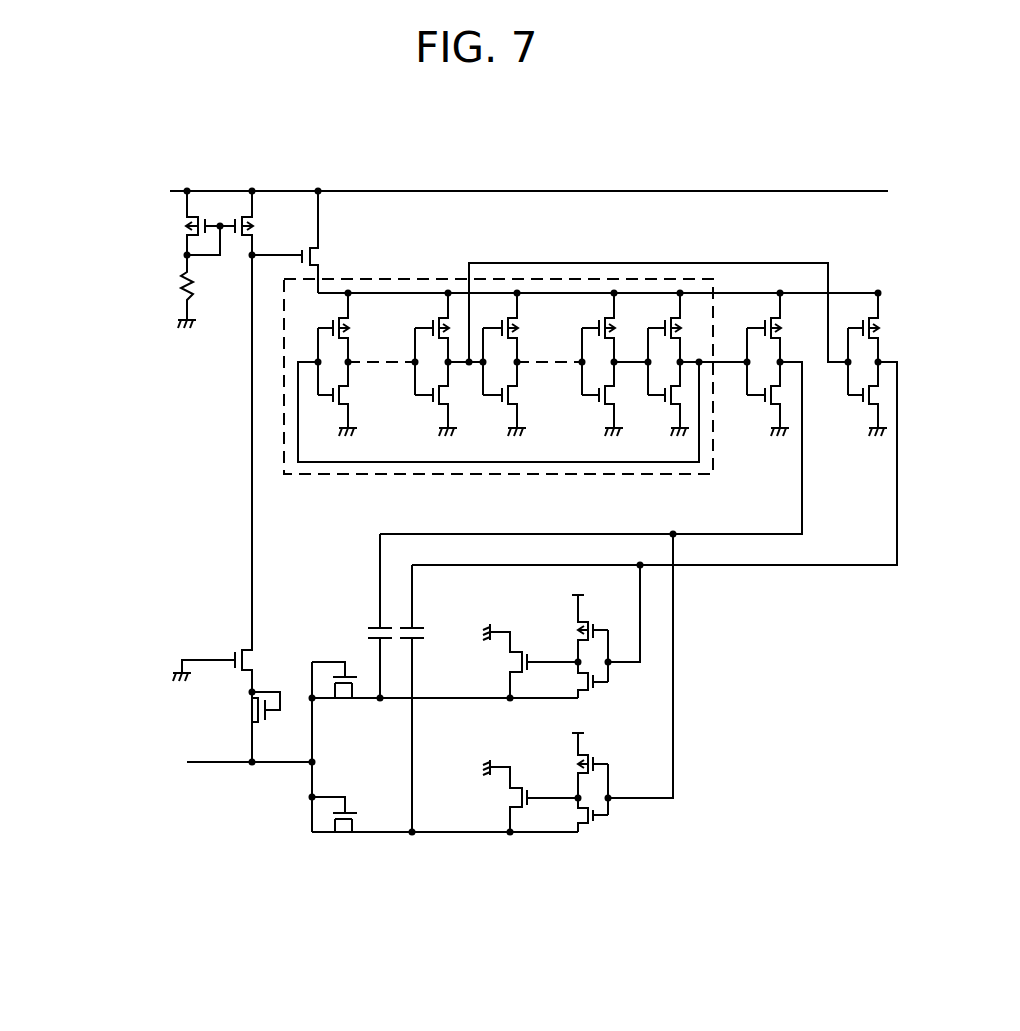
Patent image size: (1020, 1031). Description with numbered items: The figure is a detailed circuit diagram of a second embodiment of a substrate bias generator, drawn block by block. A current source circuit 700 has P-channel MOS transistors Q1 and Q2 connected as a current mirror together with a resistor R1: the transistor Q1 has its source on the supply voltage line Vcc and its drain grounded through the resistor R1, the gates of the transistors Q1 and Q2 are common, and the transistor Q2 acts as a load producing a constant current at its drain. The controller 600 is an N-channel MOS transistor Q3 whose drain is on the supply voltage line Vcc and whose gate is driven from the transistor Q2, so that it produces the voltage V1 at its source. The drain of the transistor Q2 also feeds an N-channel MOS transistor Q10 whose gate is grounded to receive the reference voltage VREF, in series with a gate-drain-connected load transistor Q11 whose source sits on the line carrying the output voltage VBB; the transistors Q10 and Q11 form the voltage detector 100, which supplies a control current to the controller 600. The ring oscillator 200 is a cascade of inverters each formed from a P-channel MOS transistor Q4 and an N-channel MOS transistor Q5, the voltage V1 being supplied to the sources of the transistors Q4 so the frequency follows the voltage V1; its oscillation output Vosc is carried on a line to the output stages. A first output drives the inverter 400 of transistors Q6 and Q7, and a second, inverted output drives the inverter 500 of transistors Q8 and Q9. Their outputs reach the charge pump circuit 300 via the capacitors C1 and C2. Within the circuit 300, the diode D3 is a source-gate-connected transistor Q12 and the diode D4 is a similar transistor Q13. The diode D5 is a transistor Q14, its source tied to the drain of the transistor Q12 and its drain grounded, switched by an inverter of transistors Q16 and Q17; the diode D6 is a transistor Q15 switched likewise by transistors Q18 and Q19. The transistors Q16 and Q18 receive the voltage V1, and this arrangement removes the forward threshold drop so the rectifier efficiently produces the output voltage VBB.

The voltage detector 100 is at (114, 625).
The ring oscillator 200 is at (484, 478).
The charge pump circuit 300 is at (772, 592).
The inverter 400 is at (800, 250).
The inverter 500 is at (890, 252).
The controller 600 is at (357, 168).
The current source circuit 700 is at (272, 168).
The P-channel MOS transistor Q1 is at (182, 226).
The P-channel MOS transistor Q2 is at (256, 230).
The N-channel MOS transistor Q3 is at (322, 262).
The P-channel MOS transistor Q4 is at (364, 332).
The N-channel MOS transistor Q5 is at (352, 404).
The P-channel MOS transistor Q6 is at (760, 330).
The N-channel MOS transistor Q7 is at (770, 408).
The P-channel MOS transistor Q8 is at (886, 334).
The N-channel MOS transistor Q9 is at (868, 410).
The N-channel MOS transistor Q10 is at (238, 650).
The N-channel MOS transistor Q11 is at (244, 716).
The N-channel MOS transistor Q12 is at (352, 704).
The N-channel MOS transistor Q13 is at (342, 835).
The N-channel MOS transistor Q14 is at (504, 680).
The N-channel MOS transistor Q15 is at (506, 804).
The P-channel MOS transistor Q16 is at (600, 630).
The N-channel MOS transistor Q17 is at (596, 692).
The P-channel MOS transistor Q18 is at (602, 766).
The N-channel MOS transistor Q19 is at (598, 828).
The resistor R1 is at (182, 284).
The capacitor C1 is at (372, 624).
The capacitor C2 is at (426, 630).
The diode D3 is at (345, 656).
The diode D4 is at (355, 872).
The diode D5 is at (686, 587).
The diode D6 is at (686, 730).
The supply voltage V1 is at (416, 292).
The supply voltage line Vcc is at (768, 190).
The oscillation signal Vosc is at (622, 262).
The reference voltage VREF is at (140, 644).
The output voltage VBB is at (222, 764).